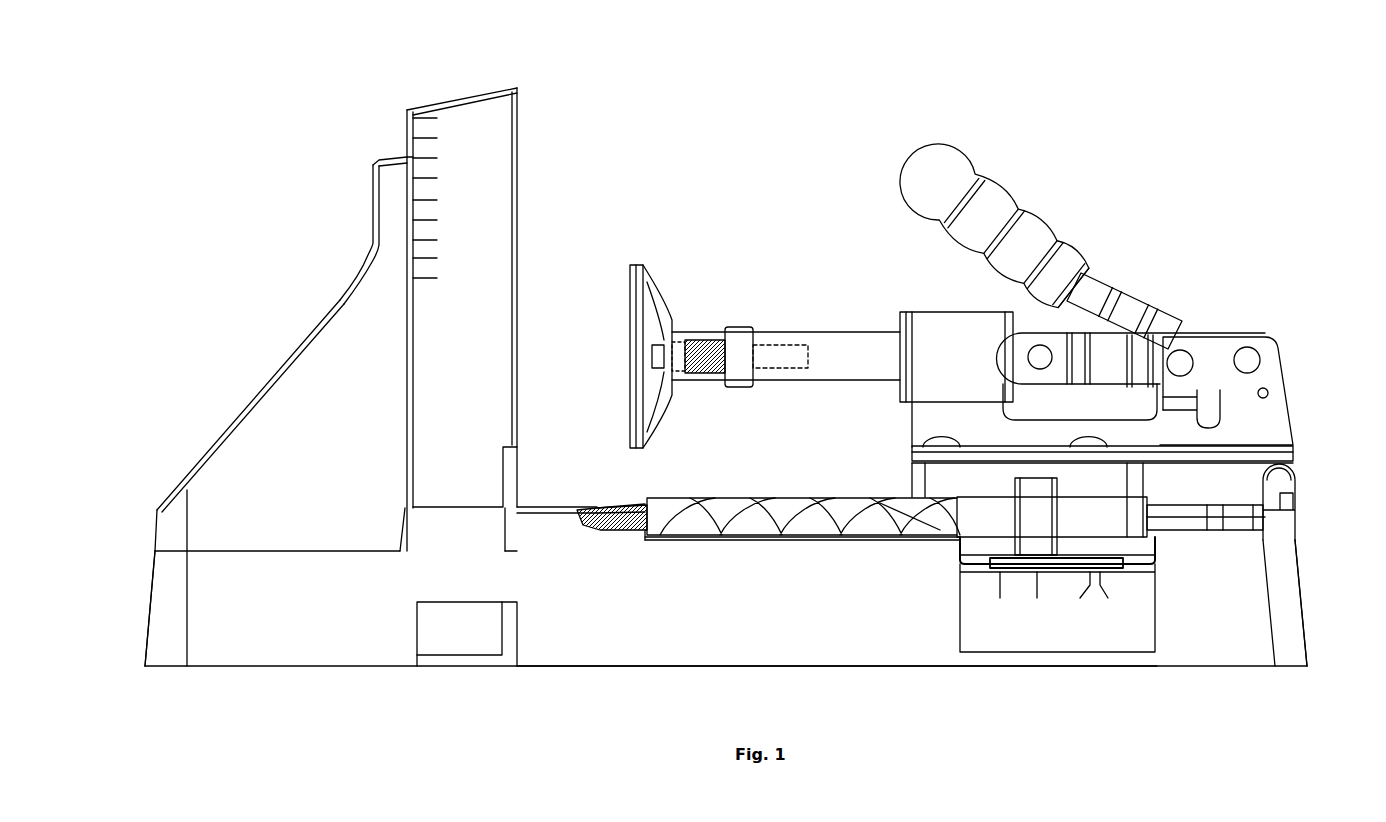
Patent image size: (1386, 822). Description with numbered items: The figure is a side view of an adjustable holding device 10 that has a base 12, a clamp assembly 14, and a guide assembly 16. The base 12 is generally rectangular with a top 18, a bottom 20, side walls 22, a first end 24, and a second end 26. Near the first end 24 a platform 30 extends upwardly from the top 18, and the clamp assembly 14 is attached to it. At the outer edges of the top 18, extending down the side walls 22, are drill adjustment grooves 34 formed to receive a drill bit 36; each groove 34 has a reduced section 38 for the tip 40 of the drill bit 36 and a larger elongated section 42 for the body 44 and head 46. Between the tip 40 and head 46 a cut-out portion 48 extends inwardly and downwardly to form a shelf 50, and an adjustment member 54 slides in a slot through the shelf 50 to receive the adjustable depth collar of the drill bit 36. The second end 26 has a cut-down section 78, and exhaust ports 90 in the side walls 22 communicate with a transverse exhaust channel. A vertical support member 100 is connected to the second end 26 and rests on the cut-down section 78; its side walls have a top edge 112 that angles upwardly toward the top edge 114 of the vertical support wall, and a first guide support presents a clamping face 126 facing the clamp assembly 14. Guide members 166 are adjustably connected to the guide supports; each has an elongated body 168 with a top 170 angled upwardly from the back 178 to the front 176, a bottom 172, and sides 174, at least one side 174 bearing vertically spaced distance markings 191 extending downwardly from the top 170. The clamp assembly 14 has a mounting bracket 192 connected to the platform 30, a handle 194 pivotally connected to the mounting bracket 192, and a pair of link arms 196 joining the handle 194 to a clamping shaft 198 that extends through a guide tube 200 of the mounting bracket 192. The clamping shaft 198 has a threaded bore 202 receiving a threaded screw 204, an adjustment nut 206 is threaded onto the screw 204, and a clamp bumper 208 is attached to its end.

The adjustable holding device 10 is at (866, 106).
The base 12 is at (583, 667).
The clamp assembly 14 is at (1003, 333).
The guide assembly 16 is at (282, 305).
The top 18 is at (535, 510).
The bottom 20 is at (325, 667).
The side walls 22 is at (728, 622).
The first end 24 is at (1300, 596).
The second end 26 is at (147, 620).
The platform 30 is at (1240, 482).
The drill adjustment grooves 34 is at (660, 548).
The drill bit 36 is at (801, 496).
The reduced section 38 is at (612, 527).
The tip 40 is at (621, 508).
The elongated section 42 is at (810, 538).
The body 44 is at (945, 505).
The head 46 is at (1172, 503).
The cut-out portion 48 is at (985, 547).
The shelf 50 is at (1135, 566).
The adjustment member 54 is at (1070, 545).
The cut-down section 78 is at (462, 562).
The exhaust ports 90 is at (452, 642).
The vertical support member 100 is at (282, 305).
The top edge 112 is at (300, 342).
The top edge 114 is at (392, 158).
The clamping face 126 is at (412, 290).
The guide members 166 is at (472, 296).
The elongated body 168 is at (519, 320).
The top 170 is at (497, 88).
The bottom 172 is at (467, 514).
The sides 174 is at (487, 385).
The front 176 is at (518, 196).
The back 178 is at (412, 352).
The distance markings 191 is at (422, 134).
The mounting bracket 192 is at (1270, 410).
The handle 194 is at (1035, 190).
The link arms 196 is at (1110, 370).
The clamping shaft 198 is at (852, 352).
The guide tube 200 is at (935, 343).
The threaded bore 202 is at (767, 345).
The threaded screw 204 is at (690, 340).
The adjustment nut 206 is at (733, 327).
The clamp bumper 208 is at (655, 266).